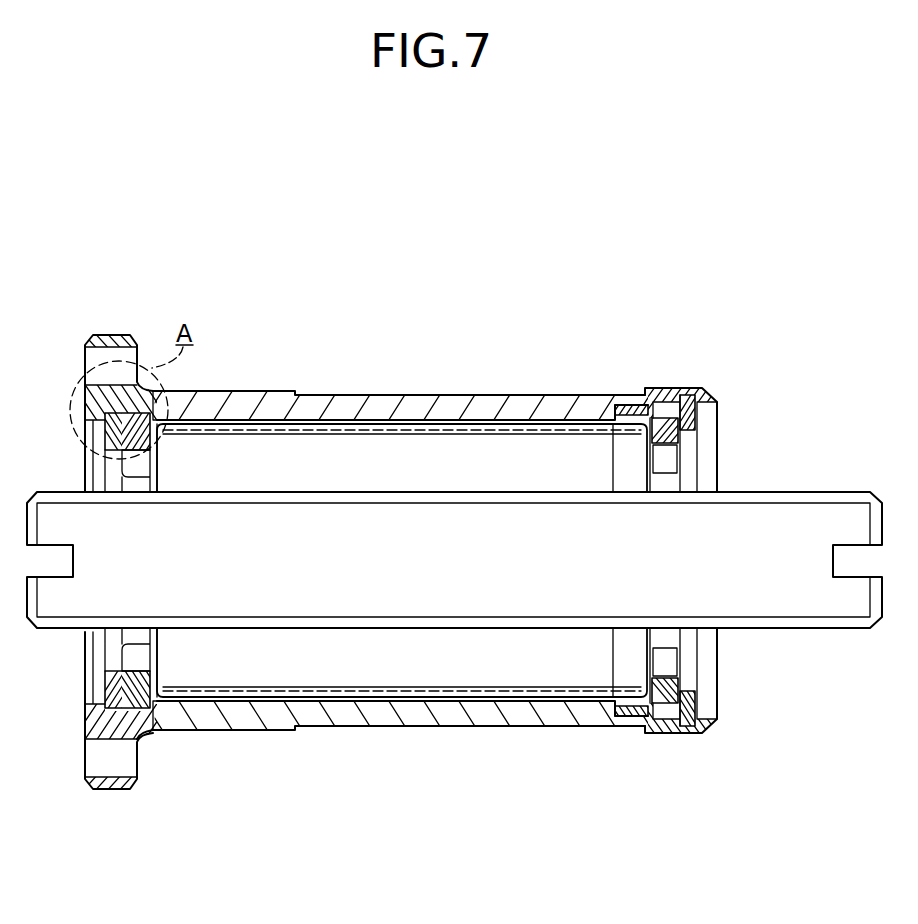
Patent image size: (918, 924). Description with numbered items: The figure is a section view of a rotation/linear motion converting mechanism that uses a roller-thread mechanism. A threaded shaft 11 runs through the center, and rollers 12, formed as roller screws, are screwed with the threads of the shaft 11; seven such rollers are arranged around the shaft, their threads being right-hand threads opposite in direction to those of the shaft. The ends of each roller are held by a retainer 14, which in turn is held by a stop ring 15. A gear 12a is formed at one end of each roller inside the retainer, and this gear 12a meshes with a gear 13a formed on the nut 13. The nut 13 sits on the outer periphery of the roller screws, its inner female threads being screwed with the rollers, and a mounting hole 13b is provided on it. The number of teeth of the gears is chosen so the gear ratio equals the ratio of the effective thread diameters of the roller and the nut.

The shaft 11 is at (750, 628).
The rollers 12 is at (468, 442).
The gear 12a is at (622, 425).
The nut 13 is at (452, 727).
The gear 13a is at (633, 712).
The mounting hole 13b is at (133, 348).
The retainer 14 is at (150, 736).
The stop ring 15 is at (98, 413).